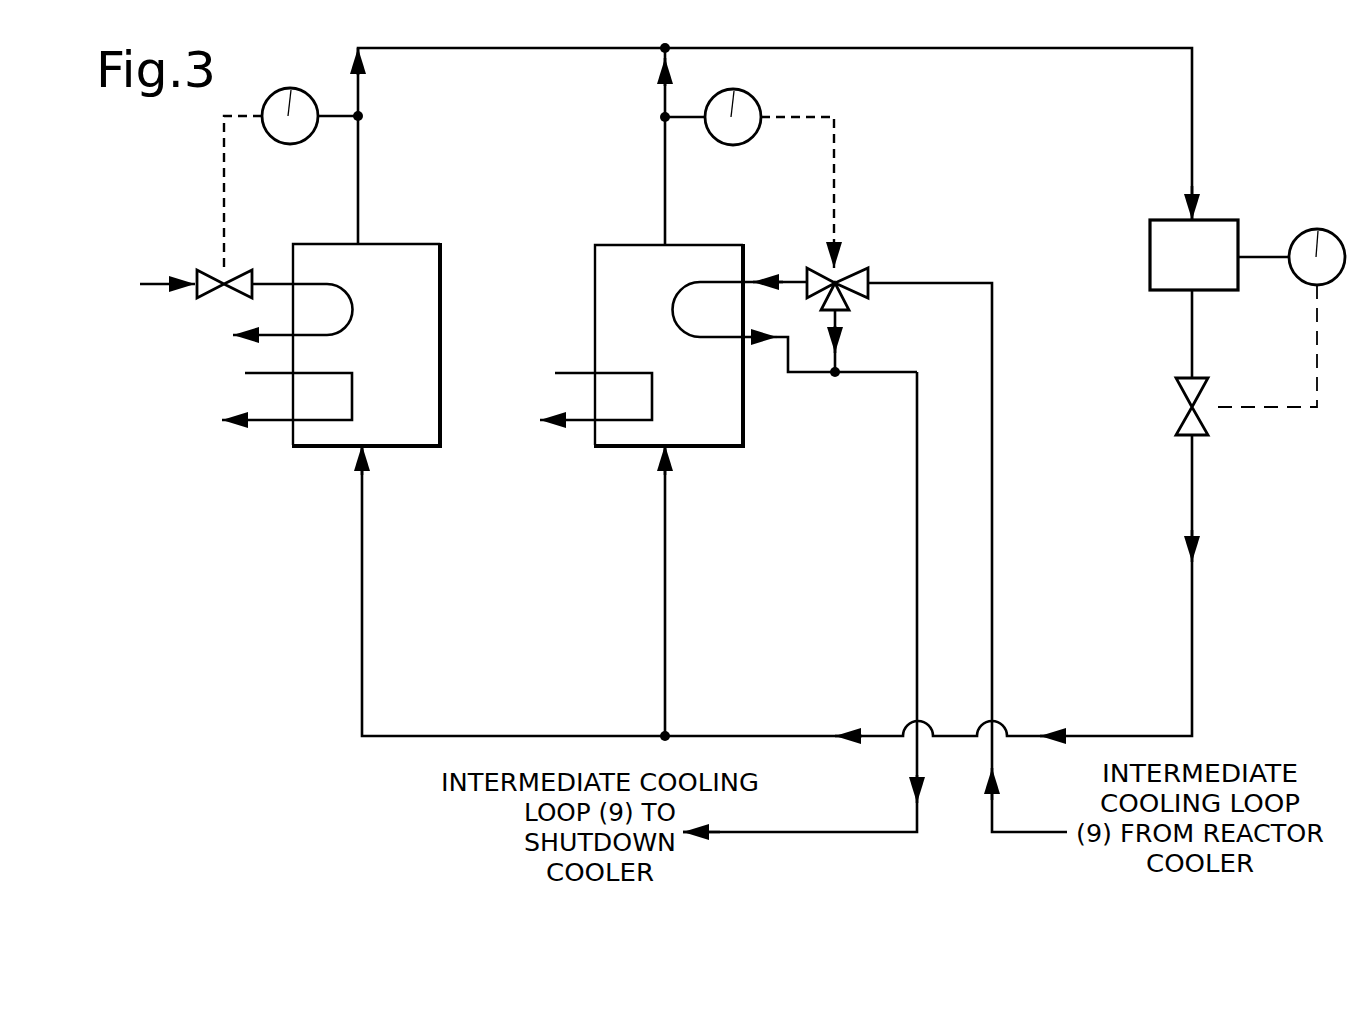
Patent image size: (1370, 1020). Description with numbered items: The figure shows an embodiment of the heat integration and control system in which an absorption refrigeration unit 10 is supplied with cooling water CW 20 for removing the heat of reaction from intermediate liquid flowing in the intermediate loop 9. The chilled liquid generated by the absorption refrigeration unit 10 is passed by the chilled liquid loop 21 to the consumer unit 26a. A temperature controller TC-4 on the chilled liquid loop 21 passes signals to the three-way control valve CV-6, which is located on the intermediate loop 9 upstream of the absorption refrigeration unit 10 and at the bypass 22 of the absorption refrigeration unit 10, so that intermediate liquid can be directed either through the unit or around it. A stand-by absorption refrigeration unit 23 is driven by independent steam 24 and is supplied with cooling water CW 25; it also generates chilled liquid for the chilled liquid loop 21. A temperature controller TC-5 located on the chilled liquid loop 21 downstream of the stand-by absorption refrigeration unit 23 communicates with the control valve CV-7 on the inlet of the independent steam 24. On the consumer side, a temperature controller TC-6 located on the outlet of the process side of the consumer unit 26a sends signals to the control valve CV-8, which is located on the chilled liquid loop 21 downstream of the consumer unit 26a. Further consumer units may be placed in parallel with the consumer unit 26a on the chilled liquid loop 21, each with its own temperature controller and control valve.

The intermediate loop 9 is at (918, 287).
The absorption refrigeration unit 10 is at (650, 319).
The CW 20 is at (596, 396).
The chilled liquid loop 21 is at (410, 48).
The bypass 22 is at (794, 329).
The stand-by absorption refrigeration unit 23 is at (410, 367).
The independent steam 24 is at (246, 309).
The CW 25 is at (287, 396).
The consumer unit 26a is at (1218, 269).
The temperature controller TC-4 is at (749, 162).
The temperature controller TC-5 is at (291, 162).
The temperature controller TC-6 is at (1277, 302).
The 3-way control valve CV-6 is at (841, 280).
The control valve CV-7 is at (222, 280).
The control valve CV-8 is at (1190, 405).